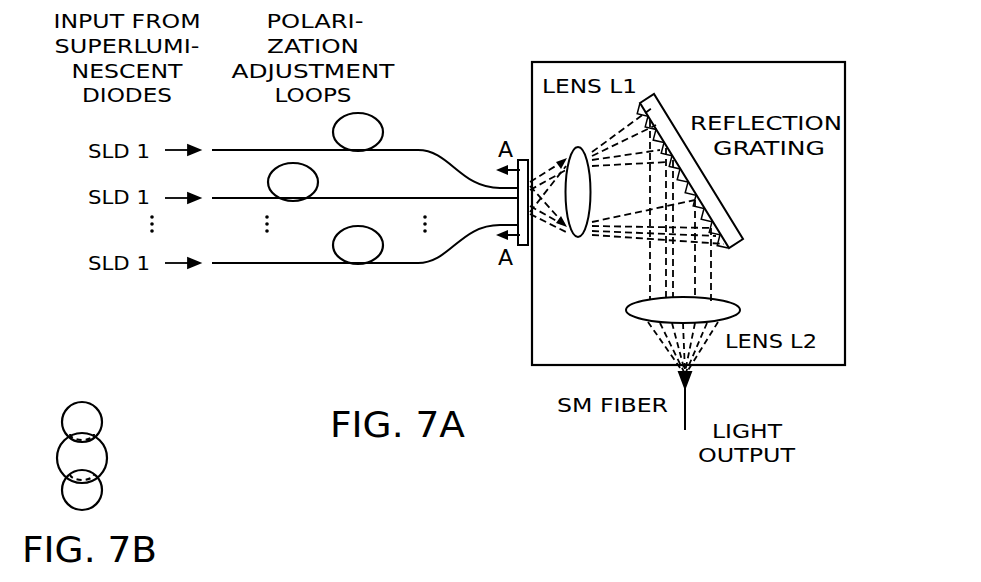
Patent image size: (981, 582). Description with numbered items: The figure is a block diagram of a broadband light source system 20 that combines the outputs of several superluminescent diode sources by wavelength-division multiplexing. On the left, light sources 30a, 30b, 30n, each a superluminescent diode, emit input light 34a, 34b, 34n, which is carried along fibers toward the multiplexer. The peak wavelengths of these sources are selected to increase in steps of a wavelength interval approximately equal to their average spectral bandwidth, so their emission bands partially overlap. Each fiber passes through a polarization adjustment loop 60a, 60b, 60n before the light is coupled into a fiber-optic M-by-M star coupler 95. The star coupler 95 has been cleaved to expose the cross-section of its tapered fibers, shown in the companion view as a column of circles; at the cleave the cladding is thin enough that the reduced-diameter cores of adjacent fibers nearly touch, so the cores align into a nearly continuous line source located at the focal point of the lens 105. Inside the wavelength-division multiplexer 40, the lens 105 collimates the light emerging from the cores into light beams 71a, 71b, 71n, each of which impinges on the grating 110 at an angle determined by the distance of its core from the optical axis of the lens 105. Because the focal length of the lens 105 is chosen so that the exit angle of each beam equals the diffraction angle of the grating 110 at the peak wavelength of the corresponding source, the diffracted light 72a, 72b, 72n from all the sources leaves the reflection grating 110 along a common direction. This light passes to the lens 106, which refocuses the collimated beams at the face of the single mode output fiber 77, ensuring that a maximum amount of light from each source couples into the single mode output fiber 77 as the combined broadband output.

The broadband light source system 20 is at (439, 38).
The light source 30a is at (125, 137).
The light source 30b is at (125, 188).
The light source 30n is at (125, 280).
The input light 34a is at (195, 148).
The input light 34b is at (195, 195).
The input light 34n is at (195, 260).
The polarization adjustment loop 60a is at (383, 127).
The polarization adjustment loop 60b is at (318, 187).
The polarization adjustment loop 60n is at (350, 265).
The fiber-optic M×M star coupler 95 is at (528, 158).
The wavelength-division multiplexer 40 is at (724, 62).
The lens 105 is at (568, 212).
The light beam 71a is at (628, 133).
The light beam 71b is at (625, 153).
The light beam 71n is at (635, 162).
The grating 110 is at (658, 100).
The light 72a is at (648, 237).
The light 72b is at (666, 258).
The light 72n is at (666, 273).
The lens 106 is at (737, 301).
The single mode output fiber 77 is at (687, 402).